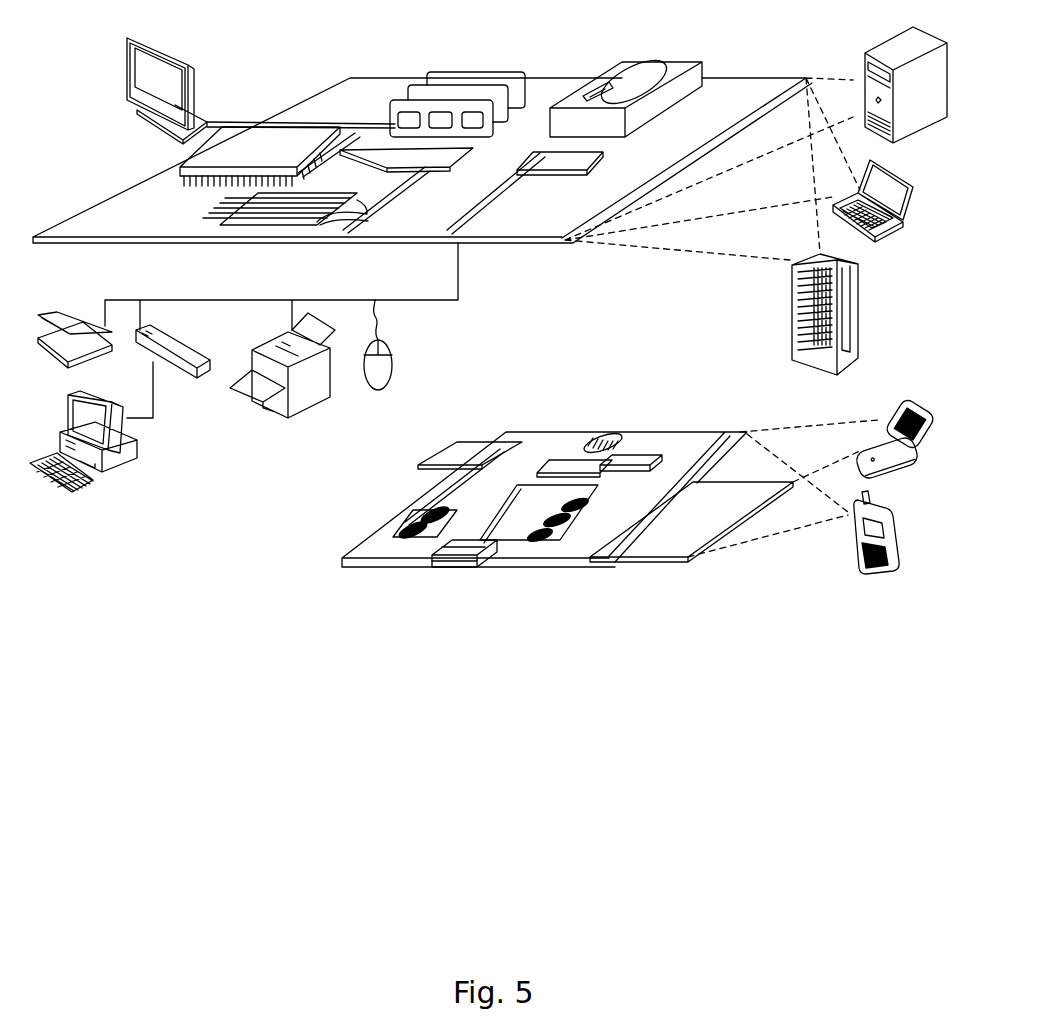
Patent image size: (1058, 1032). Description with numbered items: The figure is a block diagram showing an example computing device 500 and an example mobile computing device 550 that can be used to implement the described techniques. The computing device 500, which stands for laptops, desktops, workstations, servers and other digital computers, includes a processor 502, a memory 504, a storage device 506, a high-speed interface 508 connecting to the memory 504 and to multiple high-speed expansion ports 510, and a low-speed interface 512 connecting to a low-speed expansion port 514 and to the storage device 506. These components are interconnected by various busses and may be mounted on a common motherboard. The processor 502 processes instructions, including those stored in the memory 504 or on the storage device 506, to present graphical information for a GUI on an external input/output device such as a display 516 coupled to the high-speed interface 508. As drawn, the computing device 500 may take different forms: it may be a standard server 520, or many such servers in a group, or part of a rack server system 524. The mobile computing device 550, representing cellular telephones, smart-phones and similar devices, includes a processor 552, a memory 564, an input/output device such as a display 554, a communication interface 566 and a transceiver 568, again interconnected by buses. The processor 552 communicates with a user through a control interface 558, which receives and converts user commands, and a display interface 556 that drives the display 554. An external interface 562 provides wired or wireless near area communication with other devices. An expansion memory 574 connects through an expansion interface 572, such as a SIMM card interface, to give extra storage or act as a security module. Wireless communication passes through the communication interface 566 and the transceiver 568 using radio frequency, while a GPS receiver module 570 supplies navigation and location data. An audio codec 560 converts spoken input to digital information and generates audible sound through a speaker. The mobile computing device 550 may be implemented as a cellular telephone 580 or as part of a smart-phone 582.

The computing device 500 is at (278, 52).
The processor 502 is at (178, 166).
The memory 504 is at (436, 72).
The storage device 506 is at (616, 66).
The high-speed interface 508 is at (350, 132).
The high-speed expansion ports 510 is at (233, 210).
The low-speed interface 512 is at (541, 152).
The low-speed expansion port 514 is at (503, 243).
The display 516 is at (127, 38).
The standard server 520 is at (862, 63).
The rack server system 524 is at (790, 330).
The mobile computing device 550 is at (315, 570).
The processor 552 is at (467, 567).
The display 554 is at (662, 548).
The display interface 556 is at (540, 567).
The control interface 558 is at (573, 547).
The audio codec 560 is at (580, 540).
The external interface 562 is at (450, 567).
The memory 564 is at (410, 518).
The communication interface 566 is at (563, 457).
The transceiver 568 is at (633, 455).
The GPS receiver module 570 is at (607, 435).
The expansion interface 572 is at (510, 438).
The expansion memory 574 is at (457, 440).
The cellular telephone 580 is at (902, 402).
The smart-phone 582 is at (853, 540).